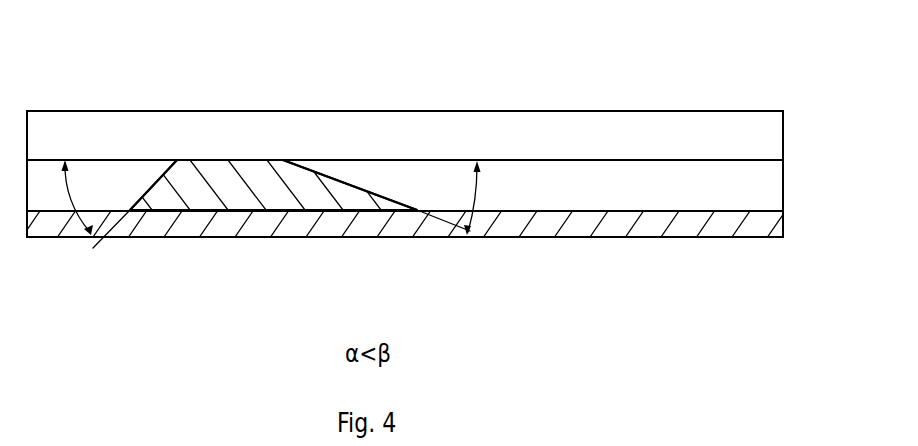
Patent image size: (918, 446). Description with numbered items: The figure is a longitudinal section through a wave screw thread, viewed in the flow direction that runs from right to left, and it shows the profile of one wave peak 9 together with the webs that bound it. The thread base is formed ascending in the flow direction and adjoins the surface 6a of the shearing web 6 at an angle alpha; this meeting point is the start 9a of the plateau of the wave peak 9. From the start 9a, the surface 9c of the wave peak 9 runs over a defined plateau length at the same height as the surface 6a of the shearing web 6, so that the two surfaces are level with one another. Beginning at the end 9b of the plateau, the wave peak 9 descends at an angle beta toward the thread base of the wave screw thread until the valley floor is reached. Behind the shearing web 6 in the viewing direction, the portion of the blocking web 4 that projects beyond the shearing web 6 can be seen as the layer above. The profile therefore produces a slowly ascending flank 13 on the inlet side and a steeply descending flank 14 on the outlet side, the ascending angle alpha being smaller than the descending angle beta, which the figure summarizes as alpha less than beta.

The blocking web 4 is at (760, 138).
The shearing web 6 is at (594, 185).
The surface of the shearing web 6a is at (500, 160).
The wave peak 9 is at (233, 190).
The start of the plateau of the wave peak 9a is at (175, 160).
The end of the plateau of the wave peak 9b is at (290, 160).
The surface of the wave peak 9c is at (227, 160).
The slowly ascending flank 13 is at (345, 192).
The steeply descending flank 14 is at (152, 188).